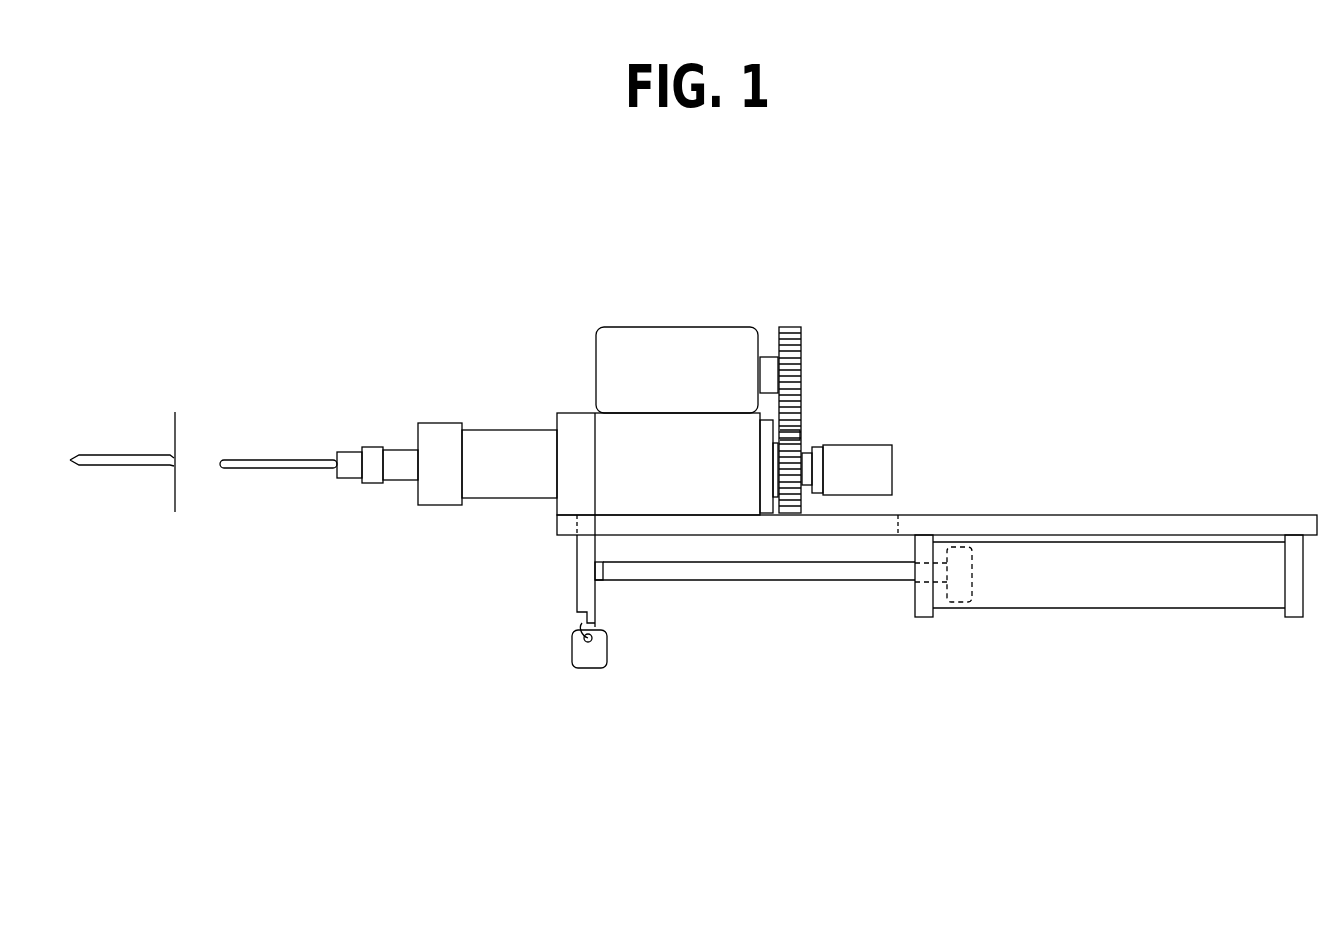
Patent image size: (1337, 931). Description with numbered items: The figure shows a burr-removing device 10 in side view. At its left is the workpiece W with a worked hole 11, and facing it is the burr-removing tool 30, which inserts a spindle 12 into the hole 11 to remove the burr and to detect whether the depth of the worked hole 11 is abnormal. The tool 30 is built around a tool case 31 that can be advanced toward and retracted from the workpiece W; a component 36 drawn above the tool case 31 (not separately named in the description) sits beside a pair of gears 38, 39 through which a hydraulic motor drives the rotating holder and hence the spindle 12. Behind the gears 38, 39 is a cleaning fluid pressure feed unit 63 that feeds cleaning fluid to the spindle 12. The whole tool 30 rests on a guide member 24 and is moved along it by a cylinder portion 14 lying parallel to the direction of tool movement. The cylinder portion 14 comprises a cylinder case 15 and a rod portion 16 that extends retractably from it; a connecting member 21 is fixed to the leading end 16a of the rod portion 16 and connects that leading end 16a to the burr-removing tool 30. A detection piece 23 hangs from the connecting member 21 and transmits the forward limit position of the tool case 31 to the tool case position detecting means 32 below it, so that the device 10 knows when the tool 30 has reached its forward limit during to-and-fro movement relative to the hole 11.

The burr-removing device 10 is at (598, 283).
The hole 11 is at (113, 455).
The workpiece W is at (163, 492).
The spindle 12 is at (257, 460).
The burr-removing tool 30 is at (475, 403).
The tool case 31 is at (511, 440).
The motor 36 is at (690, 340).
The gear 38 is at (795, 343).
The gear 39 is at (800, 435).
The cleaning fluid pressure feed unit 63 is at (885, 470).
The guide member 24 is at (933, 525).
The connecting member 21 is at (585, 588).
The detection piece 23 is at (577, 613).
The tool case position detecting means 32 is at (575, 667).
The rod portion 16 is at (790, 577).
The leading end 16a is at (605, 572).
The cylinder portion 14 is at (927, 627).
The cylinder case 15 is at (1070, 592).